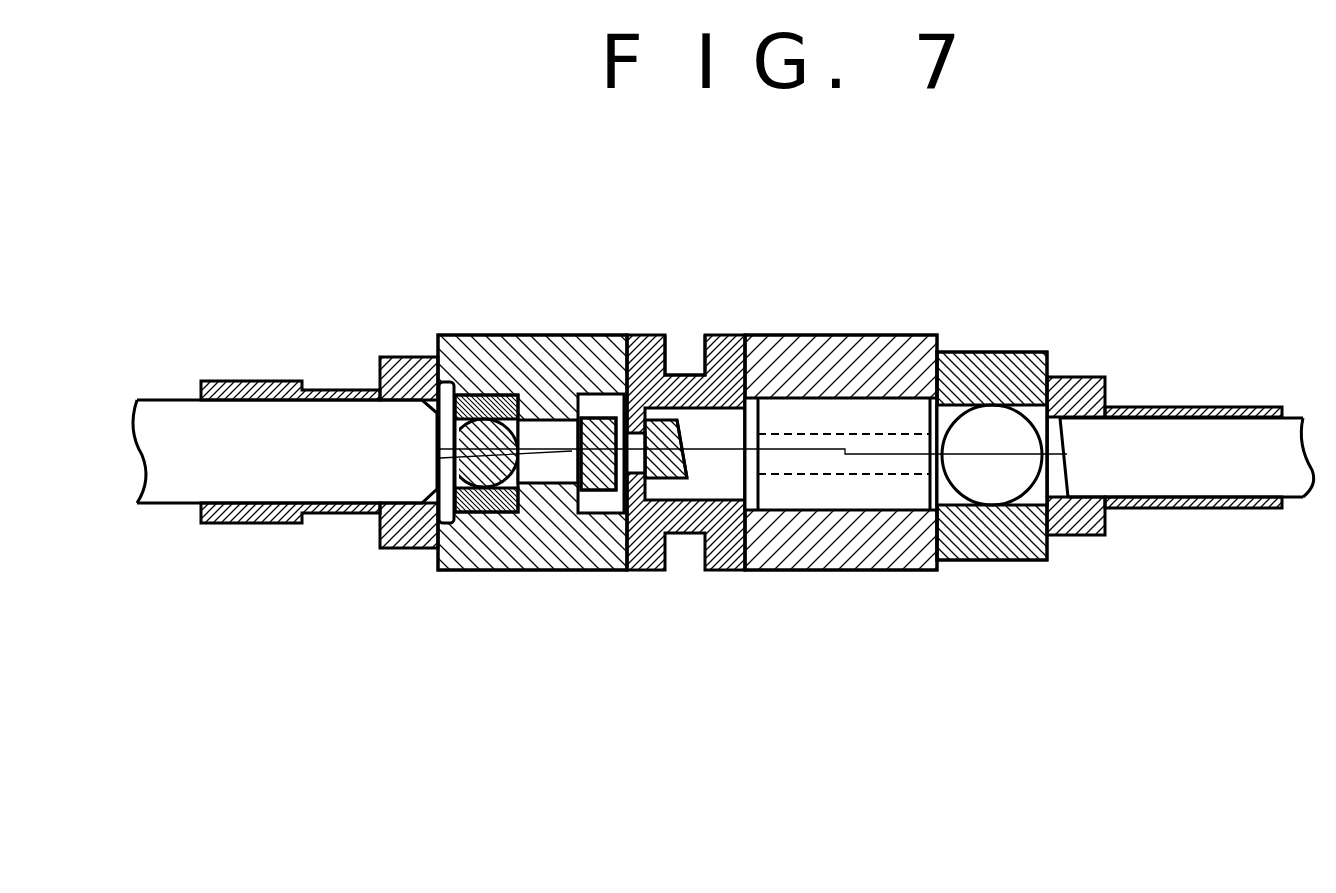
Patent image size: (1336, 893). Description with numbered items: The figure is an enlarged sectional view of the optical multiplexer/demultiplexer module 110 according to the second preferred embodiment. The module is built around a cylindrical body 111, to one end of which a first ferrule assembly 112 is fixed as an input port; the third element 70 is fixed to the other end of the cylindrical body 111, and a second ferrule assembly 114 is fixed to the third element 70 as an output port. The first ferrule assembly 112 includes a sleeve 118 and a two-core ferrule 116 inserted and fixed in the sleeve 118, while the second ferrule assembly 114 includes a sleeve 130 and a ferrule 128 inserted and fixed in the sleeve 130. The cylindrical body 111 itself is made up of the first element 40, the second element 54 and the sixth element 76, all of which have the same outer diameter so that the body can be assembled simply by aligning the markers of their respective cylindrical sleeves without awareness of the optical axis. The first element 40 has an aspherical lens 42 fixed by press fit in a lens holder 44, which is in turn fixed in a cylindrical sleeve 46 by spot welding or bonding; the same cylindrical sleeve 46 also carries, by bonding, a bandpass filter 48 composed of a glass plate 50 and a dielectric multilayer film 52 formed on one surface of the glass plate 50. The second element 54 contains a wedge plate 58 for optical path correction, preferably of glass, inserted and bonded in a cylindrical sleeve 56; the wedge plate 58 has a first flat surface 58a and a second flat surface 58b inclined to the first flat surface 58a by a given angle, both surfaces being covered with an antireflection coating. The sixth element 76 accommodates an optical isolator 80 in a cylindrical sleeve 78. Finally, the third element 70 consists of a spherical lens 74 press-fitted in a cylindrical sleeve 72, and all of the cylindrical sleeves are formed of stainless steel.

The first element 40 is at (532, 449).
The aspherical lens 42 is at (479, 430).
The lens holder 44 is at (493, 510).
The cylindrical sleeve 46 is at (553, 336).
The bandpass filter 48 is at (594, 497).
The glass plate 50 is at (600, 420).
The dielectric multilayer film 52 is at (574, 462).
The second element 54 is at (684, 375).
The cylindrical sleeve 56 is at (676, 457).
The wedge plate 58 is at (685, 536).
The first flat surface 58a is at (640, 470).
The second flat surface 58b is at (688, 462).
The third element 70 is at (992, 442).
The cylindrical sleeve 72 is at (972, 352).
The spherical lens 74 is at (987, 475).
The sixth element 76 is at (841, 452).
The cylindrical sleeve 78 is at (874, 572).
The optical isolator 80 is at (806, 490).
The optical multiplexer/demultiplexer module 110 is at (591, 434).
The cylindrical body 111 is at (753, 452).
The first ferrule assembly 112 is at (337, 386).
The second ferrule assembly 114 is at (1180, 445).
The two-core ferrule 116 is at (255, 492).
The sleeve 118 is at (247, 381).
The ferrule 128 is at (1218, 482).
The sleeve 130 is at (1143, 512).